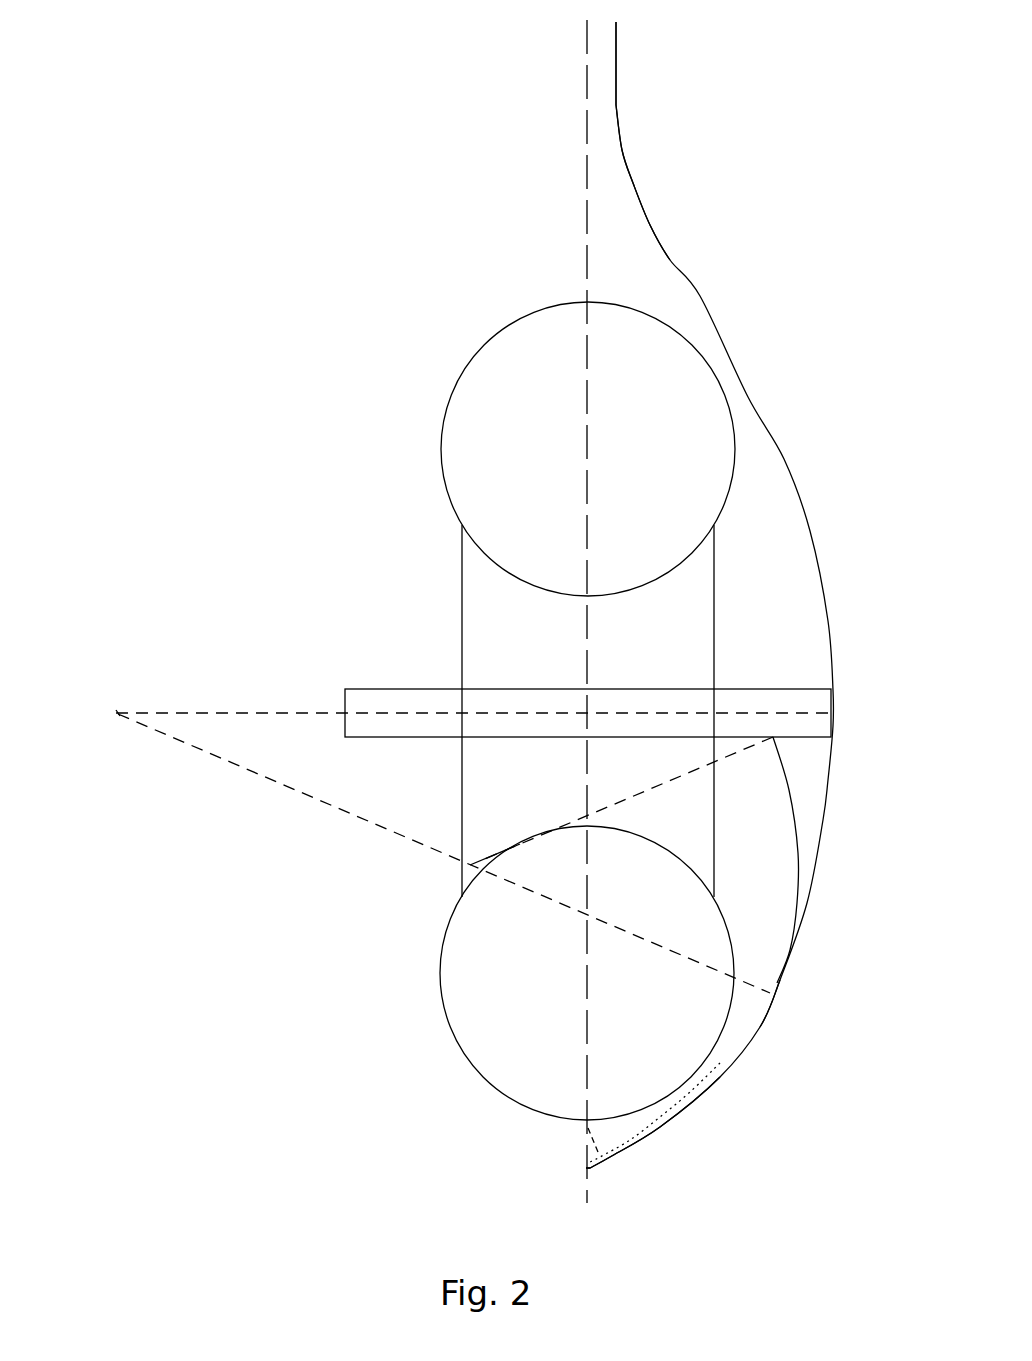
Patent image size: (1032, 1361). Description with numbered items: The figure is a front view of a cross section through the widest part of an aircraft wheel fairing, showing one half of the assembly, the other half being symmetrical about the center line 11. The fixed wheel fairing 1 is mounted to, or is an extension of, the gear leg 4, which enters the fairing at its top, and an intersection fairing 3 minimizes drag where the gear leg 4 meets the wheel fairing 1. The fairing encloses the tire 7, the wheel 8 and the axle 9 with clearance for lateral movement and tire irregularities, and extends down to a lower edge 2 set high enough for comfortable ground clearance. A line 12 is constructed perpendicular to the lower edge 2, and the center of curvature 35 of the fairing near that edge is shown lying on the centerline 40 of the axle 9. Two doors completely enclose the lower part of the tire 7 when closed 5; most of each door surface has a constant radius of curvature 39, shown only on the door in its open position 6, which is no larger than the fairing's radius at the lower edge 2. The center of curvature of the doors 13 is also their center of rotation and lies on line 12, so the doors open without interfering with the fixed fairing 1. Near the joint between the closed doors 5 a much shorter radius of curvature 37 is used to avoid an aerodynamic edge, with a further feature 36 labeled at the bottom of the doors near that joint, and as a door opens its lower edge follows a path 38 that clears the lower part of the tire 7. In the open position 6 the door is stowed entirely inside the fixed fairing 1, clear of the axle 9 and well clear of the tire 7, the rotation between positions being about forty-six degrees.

The fixed wheel fairing 1 is at (811, 526).
The lower edge 2 is at (767, 990).
The intersection fairing 3 is at (633, 183).
The gear leg 4 is at (617, 55).
The door in closed position 5 is at (703, 1093).
The door in open position 6 is at (800, 865).
The tire 7 is at (457, 1050).
The wheel 8 is at (461, 778).
The axle 9 is at (345, 687).
The center line 11 is at (585, 209).
The line perpendicular to lower edge 12 is at (234, 762).
The center of curvature of the doors 13 is at (481, 861).
The center of curvature near lower edge 35 is at (118, 714).
The tip point 36 is at (595, 1167).
The shorter radius of curvature 37 is at (595, 1143).
The path of door lower edge 38 is at (660, 1123).
The constant radius of curvature 39 is at (620, 800).
The centerline of axle 40 is at (186, 711).